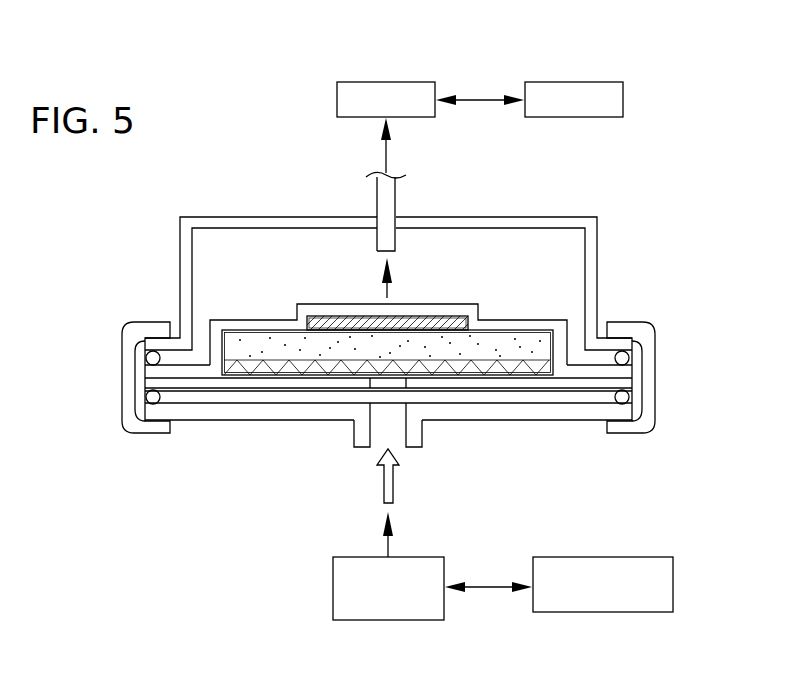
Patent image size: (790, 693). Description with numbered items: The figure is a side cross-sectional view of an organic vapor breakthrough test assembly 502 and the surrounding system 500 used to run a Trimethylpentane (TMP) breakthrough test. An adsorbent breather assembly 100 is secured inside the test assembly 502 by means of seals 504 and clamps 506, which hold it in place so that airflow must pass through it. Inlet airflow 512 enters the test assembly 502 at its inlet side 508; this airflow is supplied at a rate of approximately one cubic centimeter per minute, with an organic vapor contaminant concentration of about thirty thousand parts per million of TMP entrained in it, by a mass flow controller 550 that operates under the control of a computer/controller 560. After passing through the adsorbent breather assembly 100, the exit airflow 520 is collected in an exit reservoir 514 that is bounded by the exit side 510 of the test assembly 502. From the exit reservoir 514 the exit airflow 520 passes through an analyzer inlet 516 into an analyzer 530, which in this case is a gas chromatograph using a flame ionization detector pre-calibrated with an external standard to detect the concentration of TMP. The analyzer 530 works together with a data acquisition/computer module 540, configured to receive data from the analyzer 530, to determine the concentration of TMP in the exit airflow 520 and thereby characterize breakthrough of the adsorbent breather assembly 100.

The system 500 is at (636, 213).
The test assembly 502 is at (166, 255).
The seals 504 is at (146, 357).
The clamps 506 is at (128, 328).
The inlet side 508 is at (273, 413).
The exit side 510 is at (213, 217).
The inlet airflow 512 is at (382, 483).
The exit reservoir 514 is at (544, 276).
The analyzer inlet 516 is at (377, 247).
The exit airflow 520 is at (389, 295).
The analyzer 530 is at (385, 82).
The data acquisition/computer module 540 is at (573, 82).
The mass flow controller 550 is at (332, 587).
The computer/controller 560 is at (600, 557).
The adsorbent breather assembly 100 is at (280, 298).